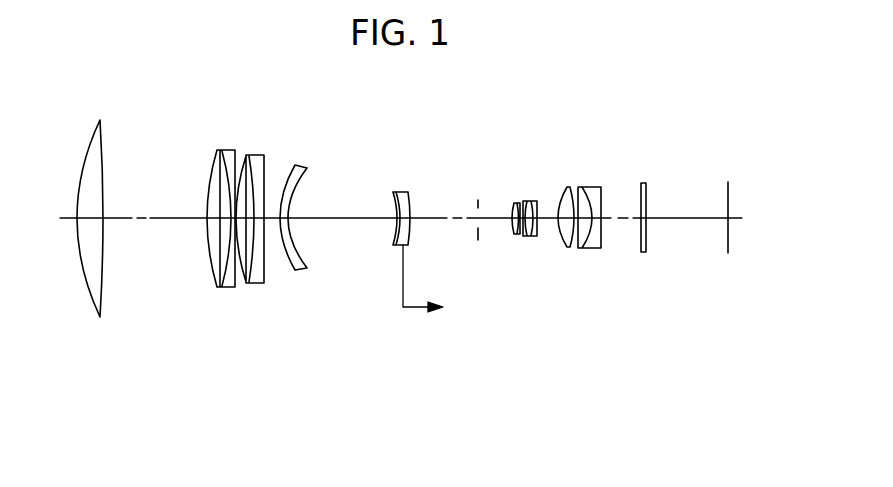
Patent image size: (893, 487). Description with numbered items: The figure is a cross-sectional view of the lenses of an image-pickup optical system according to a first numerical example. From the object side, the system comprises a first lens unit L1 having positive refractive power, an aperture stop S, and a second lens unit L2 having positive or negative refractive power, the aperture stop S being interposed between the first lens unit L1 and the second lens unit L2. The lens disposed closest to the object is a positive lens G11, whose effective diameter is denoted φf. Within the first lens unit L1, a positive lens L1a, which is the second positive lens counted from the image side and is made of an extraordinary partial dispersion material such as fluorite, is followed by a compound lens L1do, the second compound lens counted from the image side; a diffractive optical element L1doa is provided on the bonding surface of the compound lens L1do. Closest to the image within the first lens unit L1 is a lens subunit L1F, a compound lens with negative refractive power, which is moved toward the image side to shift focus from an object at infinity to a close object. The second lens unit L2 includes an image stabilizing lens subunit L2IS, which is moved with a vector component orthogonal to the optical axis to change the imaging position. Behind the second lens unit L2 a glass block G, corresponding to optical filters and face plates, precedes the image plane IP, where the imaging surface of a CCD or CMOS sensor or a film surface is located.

The positive lens G11 is at (97, 155).
The positive lens L1a is at (213, 257).
The compound lens L1do is at (268, 220).
The diffractive optical element L1doa is at (255, 163).
The lens subunit L1F is at (418, 186).
The aperture stop S is at (478, 198).
The image stabilizing lens subunit L2IS is at (540, 236).
The glass block G is at (647, 195).
The image plane IP is at (730, 195).
The first lens unit L1 is at (475, 345).
The second lens unit L2 is at (728, 345).